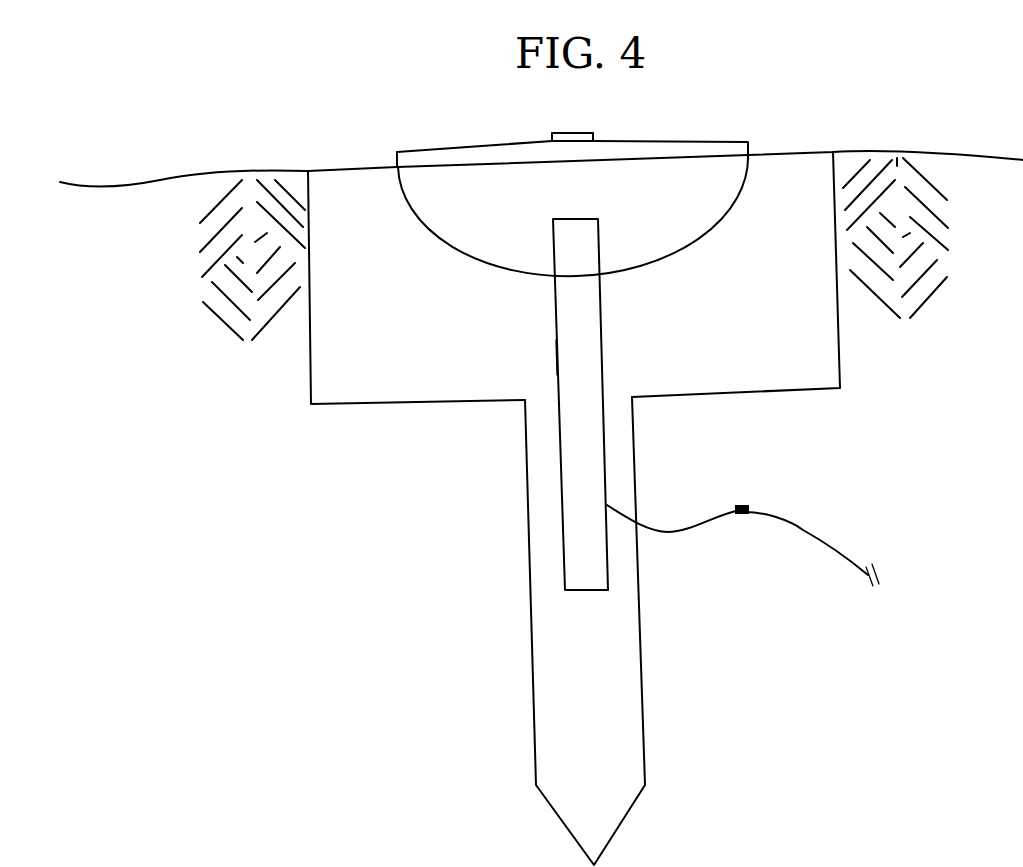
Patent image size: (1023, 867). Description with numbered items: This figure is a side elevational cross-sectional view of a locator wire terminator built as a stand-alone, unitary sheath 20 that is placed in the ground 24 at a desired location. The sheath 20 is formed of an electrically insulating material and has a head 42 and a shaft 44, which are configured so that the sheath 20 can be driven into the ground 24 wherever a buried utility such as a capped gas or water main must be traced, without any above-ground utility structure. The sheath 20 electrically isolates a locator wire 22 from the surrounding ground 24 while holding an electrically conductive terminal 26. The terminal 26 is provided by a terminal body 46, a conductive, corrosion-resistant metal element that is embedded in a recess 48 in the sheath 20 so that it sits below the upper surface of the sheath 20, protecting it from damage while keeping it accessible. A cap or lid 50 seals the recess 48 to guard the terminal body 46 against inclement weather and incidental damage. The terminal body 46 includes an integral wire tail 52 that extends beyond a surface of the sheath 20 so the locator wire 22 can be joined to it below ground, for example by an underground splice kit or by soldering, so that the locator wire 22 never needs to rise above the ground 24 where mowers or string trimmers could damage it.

The sheath 20 is at (853, 357).
The locator wire 22 is at (803, 530).
The ground 24 is at (897, 158).
The electrically conductive terminal 26 is at (600, 363).
The head 42 is at (742, 305).
The shaft 44 is at (604, 718).
The terminal body 46 is at (573, 357).
The recess 48 is at (672, 186).
The cap or lid 50 is at (571, 132).
The wire tail 52 is at (688, 528).